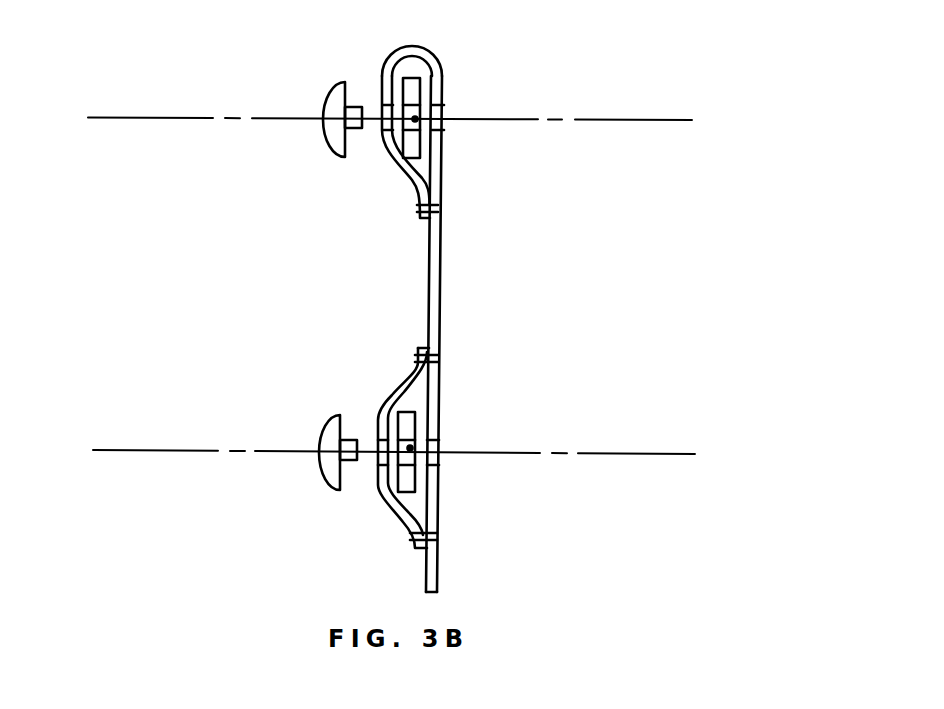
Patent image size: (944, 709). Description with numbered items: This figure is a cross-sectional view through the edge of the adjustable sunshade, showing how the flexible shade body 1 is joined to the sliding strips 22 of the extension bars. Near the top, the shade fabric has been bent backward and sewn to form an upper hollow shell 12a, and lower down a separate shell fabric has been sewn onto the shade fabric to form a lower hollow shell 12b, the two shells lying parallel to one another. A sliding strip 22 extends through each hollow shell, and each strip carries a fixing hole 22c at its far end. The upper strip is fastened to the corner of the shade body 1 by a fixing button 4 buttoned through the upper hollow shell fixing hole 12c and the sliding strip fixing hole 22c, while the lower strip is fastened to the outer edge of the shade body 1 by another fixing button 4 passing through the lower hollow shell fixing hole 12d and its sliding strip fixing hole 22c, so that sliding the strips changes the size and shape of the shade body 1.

The shade body 1 is at (448, 283).
The fixing button 4 is at (323, 103).
The upper hollow shell 12a is at (415, 72).
The lower hollow shell 12b is at (412, 503).
The upper hollow shell fixing hole 12c is at (438, 112).
The lower hollow shell fixing hole 12d is at (433, 457).
The sliding strip 22 is at (408, 147).
The sliding strip fixing hole 22c is at (415, 119).